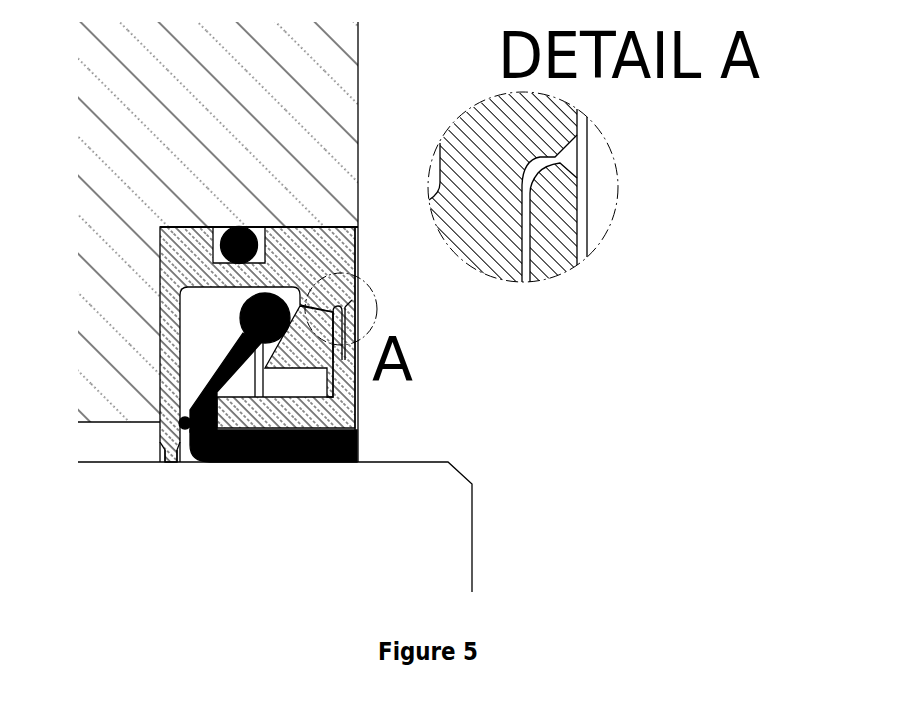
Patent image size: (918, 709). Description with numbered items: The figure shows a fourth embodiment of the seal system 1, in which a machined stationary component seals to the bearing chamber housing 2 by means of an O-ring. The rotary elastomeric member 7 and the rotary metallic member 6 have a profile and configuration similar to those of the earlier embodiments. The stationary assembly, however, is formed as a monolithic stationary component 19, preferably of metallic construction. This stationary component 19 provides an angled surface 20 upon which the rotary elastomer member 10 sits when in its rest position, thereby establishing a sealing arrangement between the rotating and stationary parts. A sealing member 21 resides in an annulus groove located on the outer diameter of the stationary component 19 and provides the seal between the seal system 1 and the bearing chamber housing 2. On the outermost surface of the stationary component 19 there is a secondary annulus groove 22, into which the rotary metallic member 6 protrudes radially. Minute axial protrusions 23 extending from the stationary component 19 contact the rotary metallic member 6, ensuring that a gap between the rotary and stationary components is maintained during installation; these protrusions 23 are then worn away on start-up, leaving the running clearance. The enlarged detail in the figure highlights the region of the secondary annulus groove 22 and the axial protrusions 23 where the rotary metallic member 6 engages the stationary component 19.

The seal system 1 is at (470, 354).
The bearing chamber housing 2 is at (283, 145).
The rotary metallic member 6 is at (363, 413).
The rotary elastomeric member 7 is at (318, 460).
The rotary elastomer member 10 is at (262, 340).
The monolithic stationary component 19 is at (330, 255).
The angled surface 20 is at (284, 352).
The sealing member 21 is at (233, 231).
The secondary annulus groove 22 is at (341, 307).
The axial protrusions 23 is at (531, 193).